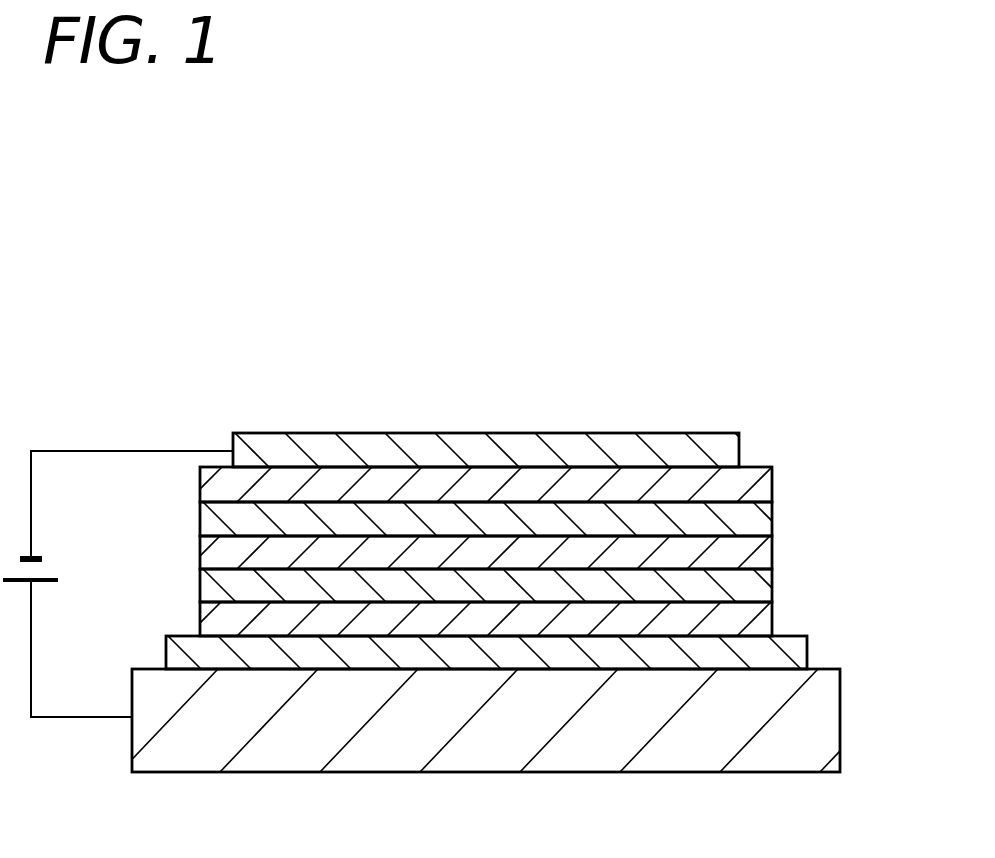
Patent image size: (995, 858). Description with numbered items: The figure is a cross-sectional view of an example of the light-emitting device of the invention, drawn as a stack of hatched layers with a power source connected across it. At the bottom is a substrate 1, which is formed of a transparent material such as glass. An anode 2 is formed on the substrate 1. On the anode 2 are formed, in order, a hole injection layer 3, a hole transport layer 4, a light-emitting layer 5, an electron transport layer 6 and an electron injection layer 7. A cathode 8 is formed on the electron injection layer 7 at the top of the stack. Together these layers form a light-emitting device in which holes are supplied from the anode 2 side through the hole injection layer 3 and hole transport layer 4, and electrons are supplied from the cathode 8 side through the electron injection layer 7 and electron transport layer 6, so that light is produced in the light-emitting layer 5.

The substrate 1 is at (820, 717).
The anode 2 is at (800, 647).
The hole injection layer 3 is at (743, 632).
The hole transport layer 4 is at (752, 585).
The light-emitting layer 5 is at (755, 545).
The electron transport layer 6 is at (755, 513).
The electron injection layer 7 is at (755, 487).
The cathode 8 is at (722, 450).